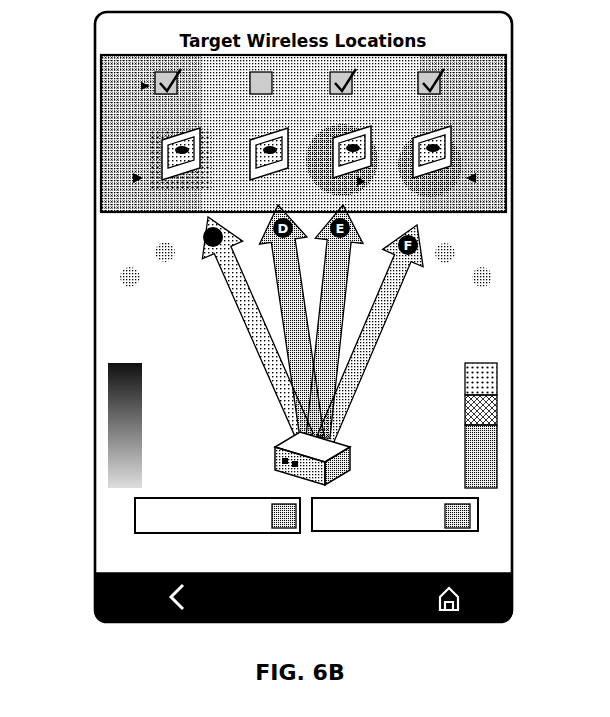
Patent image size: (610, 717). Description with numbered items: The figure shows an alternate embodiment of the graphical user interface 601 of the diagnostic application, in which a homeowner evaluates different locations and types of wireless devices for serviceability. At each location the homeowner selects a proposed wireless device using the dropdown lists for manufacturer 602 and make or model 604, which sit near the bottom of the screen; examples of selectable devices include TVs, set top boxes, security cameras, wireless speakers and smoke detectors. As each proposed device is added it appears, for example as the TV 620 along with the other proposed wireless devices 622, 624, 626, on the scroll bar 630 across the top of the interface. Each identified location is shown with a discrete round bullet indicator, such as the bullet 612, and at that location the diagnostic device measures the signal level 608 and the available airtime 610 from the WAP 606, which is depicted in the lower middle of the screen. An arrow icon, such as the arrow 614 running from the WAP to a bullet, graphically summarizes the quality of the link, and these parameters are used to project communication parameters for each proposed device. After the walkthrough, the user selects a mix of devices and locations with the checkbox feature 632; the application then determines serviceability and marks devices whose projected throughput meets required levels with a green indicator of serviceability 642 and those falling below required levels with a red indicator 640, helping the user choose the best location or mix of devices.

The graphical user interface 601 is at (90, 558).
The manufacturer dropdown list 602 is at (215, 534).
The make or model dropdown list 604 is at (368, 532).
The WAP 606 is at (350, 465).
The signal level 608 is at (150, 422).
The available airtime 610 is at (458, 418).
The bullet indicator 612 is at (193, 250).
The arrow icon 614 is at (230, 312).
The TV 620 is at (208, 147).
The proposed wireless device 622 is at (280, 132).
The proposed wireless device 624 is at (370, 134).
The proposed wireless device 626 is at (448, 143).
The scroll bar 630 is at (102, 222).
The checkbox feature 632 is at (140, 85).
The red indicator 640 is at (134, 178).
The green indicator of serviceability 642 is at (476, 178).